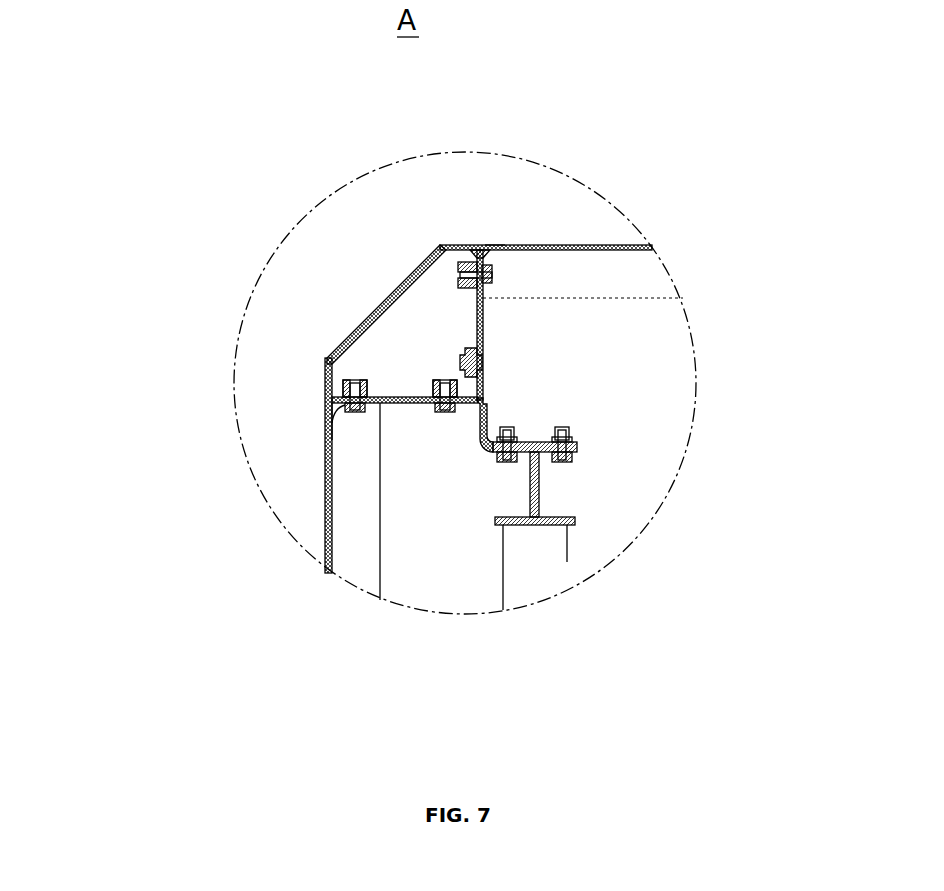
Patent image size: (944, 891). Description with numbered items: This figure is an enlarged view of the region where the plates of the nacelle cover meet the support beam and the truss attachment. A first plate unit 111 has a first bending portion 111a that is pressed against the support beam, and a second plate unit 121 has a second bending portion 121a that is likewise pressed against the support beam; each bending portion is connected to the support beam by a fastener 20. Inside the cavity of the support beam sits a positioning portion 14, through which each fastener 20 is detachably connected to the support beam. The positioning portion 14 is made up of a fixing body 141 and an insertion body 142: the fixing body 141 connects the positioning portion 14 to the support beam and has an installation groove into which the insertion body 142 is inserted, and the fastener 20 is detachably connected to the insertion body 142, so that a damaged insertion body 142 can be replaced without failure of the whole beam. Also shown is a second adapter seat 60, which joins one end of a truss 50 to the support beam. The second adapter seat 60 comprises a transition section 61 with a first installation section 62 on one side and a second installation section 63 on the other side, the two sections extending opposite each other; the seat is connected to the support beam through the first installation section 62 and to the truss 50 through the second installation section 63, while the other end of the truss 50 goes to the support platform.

The positioning portion 14 is at (276, 318).
The fixing body 141 is at (327, 390).
The insertion body 142 is at (328, 400).
The fastener 20 is at (343, 383).
The truss 50 is at (560, 560).
The second adapter seat 60 is at (643, 362).
The transition section 61 is at (490, 412).
The first installation section 62 is at (485, 393).
The second installation section 63 is at (577, 454).
The first plate unit 111 is at (575, 244).
The first bending portion 111a is at (492, 244).
The second plate unit 121 is at (328, 513).
The second bending portion 121a is at (328, 410).